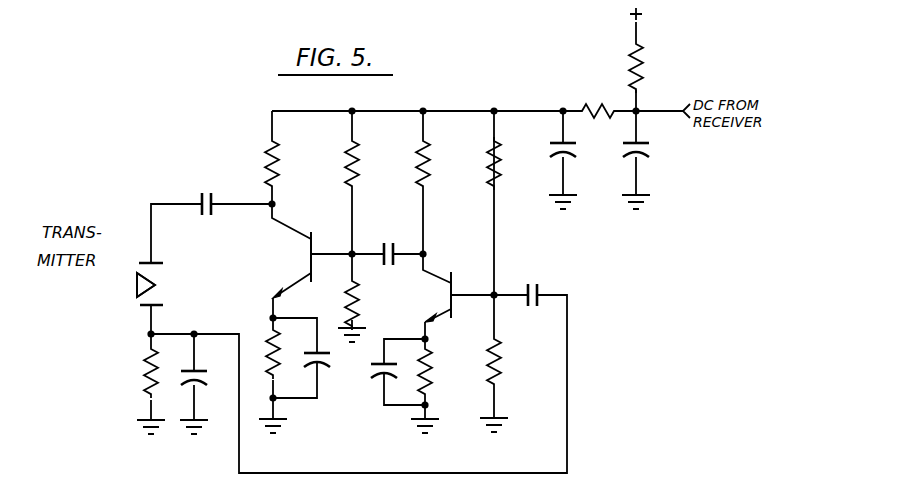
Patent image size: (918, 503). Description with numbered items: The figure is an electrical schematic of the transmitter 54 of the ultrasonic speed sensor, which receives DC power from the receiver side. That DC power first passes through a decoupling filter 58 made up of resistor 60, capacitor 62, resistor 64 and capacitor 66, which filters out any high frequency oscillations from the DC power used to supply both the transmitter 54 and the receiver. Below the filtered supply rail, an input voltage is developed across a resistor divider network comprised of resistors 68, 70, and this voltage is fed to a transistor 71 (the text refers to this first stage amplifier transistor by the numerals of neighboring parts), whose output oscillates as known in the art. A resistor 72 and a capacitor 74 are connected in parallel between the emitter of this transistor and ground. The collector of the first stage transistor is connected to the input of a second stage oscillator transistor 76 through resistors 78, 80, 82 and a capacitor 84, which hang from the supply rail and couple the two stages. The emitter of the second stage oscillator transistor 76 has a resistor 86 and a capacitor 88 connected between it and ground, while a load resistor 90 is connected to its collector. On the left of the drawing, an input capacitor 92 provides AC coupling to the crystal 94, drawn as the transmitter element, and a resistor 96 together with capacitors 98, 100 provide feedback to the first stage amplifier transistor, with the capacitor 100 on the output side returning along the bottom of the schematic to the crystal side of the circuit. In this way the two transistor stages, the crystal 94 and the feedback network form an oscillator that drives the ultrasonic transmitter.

The transmitter 54 is at (195, 152).
The decoupling filter 58 is at (603, 90).
The resistor 60 is at (645, 58).
The capacitor 62 is at (650, 150).
The resistor 64 is at (582, 118).
The capacitor 66 is at (552, 148).
The resistor 68 is at (487, 160).
The resistor 70 is at (505, 357).
The transistor 71 is at (458, 278).
The resistor 72 is at (433, 358).
The capacitor 74 is at (380, 380).
The second stage oscillator transistor 76 is at (300, 251).
The resistor 78 is at (343, 160).
The resistor 80 is at (414, 160).
The resistor 82 is at (363, 300).
The capacitor 84 is at (390, 240).
The resistor 86 is at (265, 342).
The capacitor 88 is at (323, 366).
The load resistor 90 is at (265, 163).
The input capacitor 92 is at (204, 218).
The crystal 94 is at (128, 293).
The resistor 96 is at (140, 387).
The capacitor 98 is at (210, 380).
The capacitor 100 is at (536, 276).